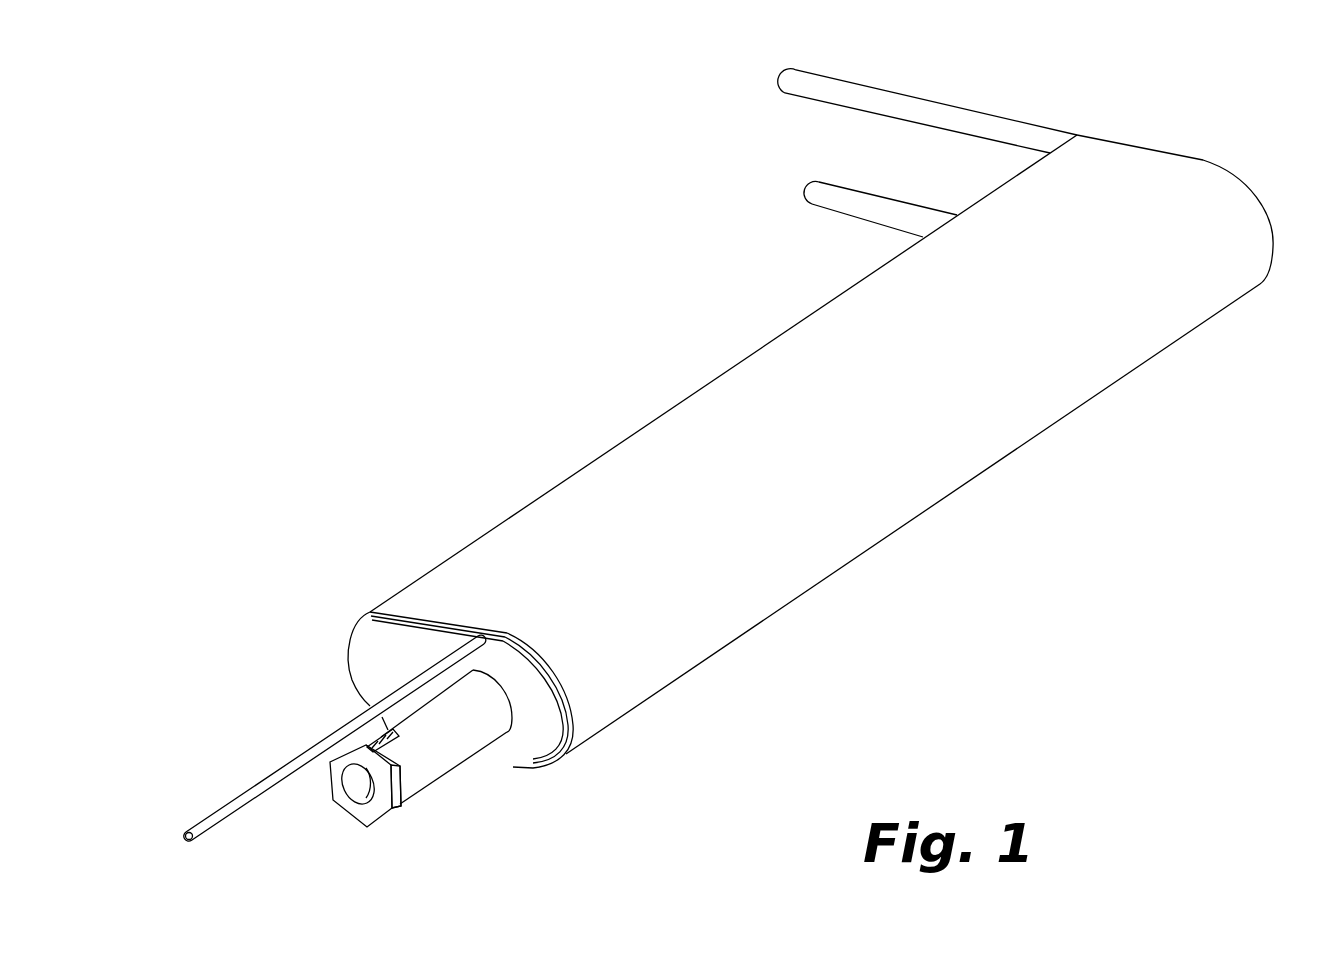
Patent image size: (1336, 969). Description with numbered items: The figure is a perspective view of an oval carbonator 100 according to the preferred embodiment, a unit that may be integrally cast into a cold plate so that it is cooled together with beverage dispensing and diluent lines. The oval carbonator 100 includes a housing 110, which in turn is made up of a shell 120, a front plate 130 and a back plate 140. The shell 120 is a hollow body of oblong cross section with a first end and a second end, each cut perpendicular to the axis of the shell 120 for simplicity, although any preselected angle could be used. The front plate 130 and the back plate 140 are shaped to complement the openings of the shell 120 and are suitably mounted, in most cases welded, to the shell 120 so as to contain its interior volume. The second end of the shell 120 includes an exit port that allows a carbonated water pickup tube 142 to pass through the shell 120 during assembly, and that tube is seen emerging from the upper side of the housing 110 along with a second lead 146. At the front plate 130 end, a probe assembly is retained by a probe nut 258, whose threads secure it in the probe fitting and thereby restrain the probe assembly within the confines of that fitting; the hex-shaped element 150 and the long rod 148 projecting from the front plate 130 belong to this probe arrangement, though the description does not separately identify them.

The oval carbonator 100 is at (475, 243).
The housing 110 is at (487, 397).
The shell 120 is at (658, 400).
The front plate 130 is at (385, 647).
The back plate 140 is at (1231, 150).
The carbonated water pickup tube 142 is at (790, 197).
The lead wire 146 is at (770, 88).
The probe rod 148 is at (222, 792).
The hex nut 150 is at (325, 800).
The probe nut 258 is at (388, 806).